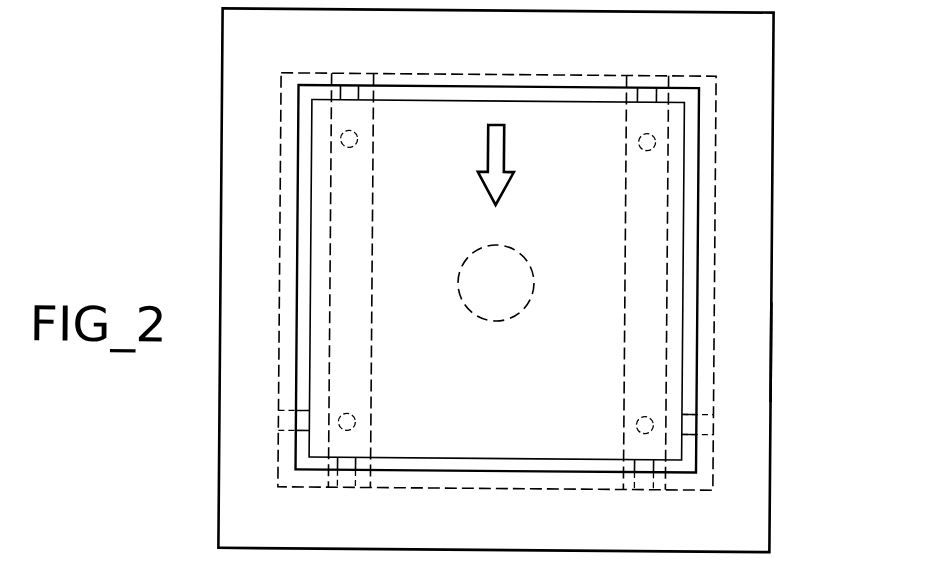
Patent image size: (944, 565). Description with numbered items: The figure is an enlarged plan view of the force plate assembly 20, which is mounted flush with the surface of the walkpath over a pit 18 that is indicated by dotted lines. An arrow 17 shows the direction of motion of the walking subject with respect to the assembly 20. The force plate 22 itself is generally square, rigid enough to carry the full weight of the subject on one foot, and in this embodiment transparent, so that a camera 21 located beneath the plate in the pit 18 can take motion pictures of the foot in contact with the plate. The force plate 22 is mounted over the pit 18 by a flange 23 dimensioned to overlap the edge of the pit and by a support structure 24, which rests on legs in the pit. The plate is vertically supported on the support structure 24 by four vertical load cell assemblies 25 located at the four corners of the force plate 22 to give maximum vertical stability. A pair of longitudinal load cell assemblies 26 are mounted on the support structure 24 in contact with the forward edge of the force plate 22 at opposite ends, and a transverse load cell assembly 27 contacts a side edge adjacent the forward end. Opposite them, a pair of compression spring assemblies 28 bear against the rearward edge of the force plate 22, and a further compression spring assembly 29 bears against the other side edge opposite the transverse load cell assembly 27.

The arrow 17 is at (503, 152).
The pit 18 is at (714, 256).
The force plate assembly 20 is at (788, 116).
The camera 21 is at (527, 249).
The force plate 22 is at (462, 187).
The flange 23 is at (766, 341).
The support structure 24 is at (332, 342).
The vertical load cell assemblies 25 is at (357, 139).
The longitudinal load cell assemblies 26 is at (357, 466).
The transverse load cell assembly 27 is at (689, 429).
The compression spring assemblies 28 is at (358, 81).
The compression spring assembly 29 is at (304, 413).